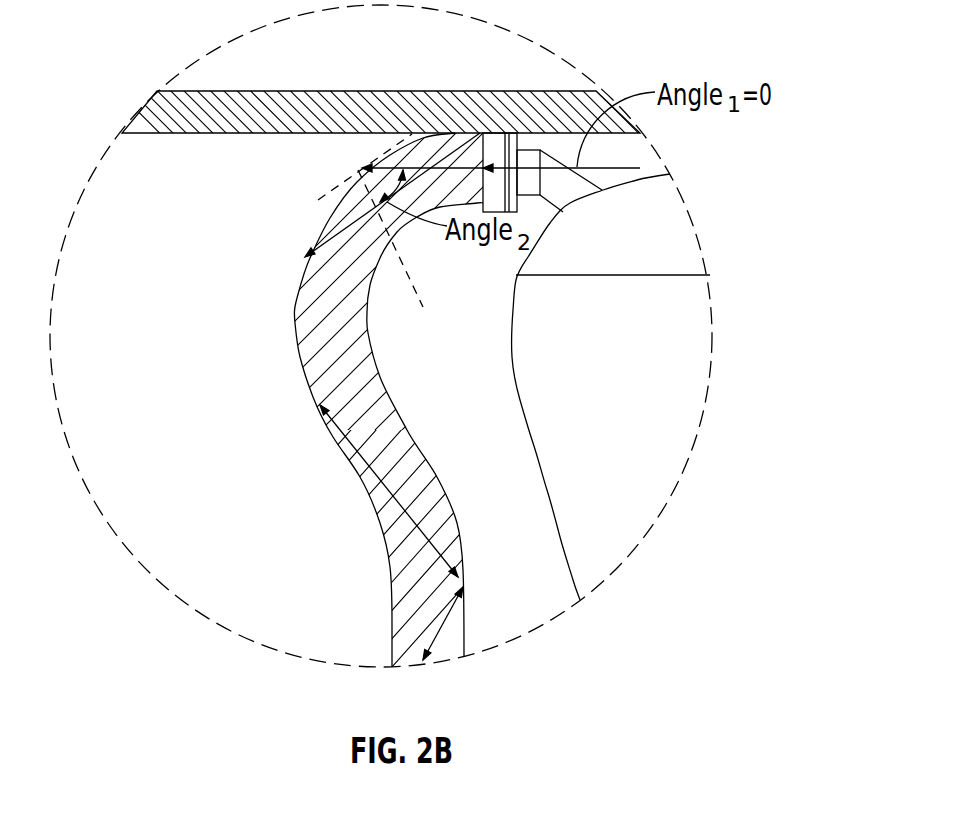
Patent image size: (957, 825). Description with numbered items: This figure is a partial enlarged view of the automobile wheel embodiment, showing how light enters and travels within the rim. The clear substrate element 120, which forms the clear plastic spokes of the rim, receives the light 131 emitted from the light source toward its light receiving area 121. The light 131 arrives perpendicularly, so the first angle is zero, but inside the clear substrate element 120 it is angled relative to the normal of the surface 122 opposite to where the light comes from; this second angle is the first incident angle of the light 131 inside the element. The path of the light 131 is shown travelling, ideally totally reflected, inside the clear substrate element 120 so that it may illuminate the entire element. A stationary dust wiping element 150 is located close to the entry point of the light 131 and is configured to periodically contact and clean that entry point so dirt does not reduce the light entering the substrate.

The clear substrate element 120 is at (318, 287).
The light receiving area 121 is at (480, 185).
The surface 122 is at (370, 170).
The light 131 is at (637, 167).
The stationary dust wiping element 150 is at (490, 136).